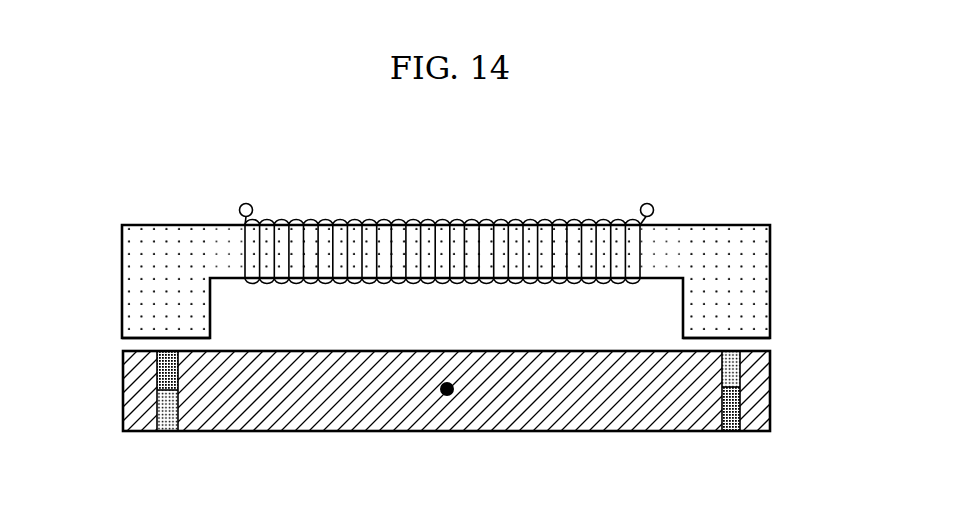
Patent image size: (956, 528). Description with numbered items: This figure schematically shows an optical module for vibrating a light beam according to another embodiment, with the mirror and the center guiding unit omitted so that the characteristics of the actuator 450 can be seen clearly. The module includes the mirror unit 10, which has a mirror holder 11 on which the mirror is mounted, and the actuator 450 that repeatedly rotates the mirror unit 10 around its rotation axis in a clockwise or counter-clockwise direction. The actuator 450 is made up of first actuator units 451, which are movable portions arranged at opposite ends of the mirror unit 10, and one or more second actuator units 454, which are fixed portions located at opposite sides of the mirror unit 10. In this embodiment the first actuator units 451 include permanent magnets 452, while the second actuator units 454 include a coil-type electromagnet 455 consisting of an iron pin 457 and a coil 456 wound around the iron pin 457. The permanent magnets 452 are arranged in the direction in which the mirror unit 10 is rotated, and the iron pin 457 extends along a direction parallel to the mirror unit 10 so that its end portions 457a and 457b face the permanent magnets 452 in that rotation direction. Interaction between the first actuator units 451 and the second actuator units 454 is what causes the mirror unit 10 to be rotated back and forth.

The mirror unit 10 is at (427, 437).
The mirror holder 11 is at (483, 412).
The actuator 450 is at (124, 201).
The first actuator unit 451 is at (164, 437).
The permanent magnet 452 is at (157, 389).
The second actuator unit 454 is at (394, 218).
The coil-type electromagnet 455 is at (572, 169).
The coil 456 is at (592, 238).
The iron pin 457 is at (683, 238).
The end portion 457a is at (164, 339).
The end portion 457b is at (726, 338).